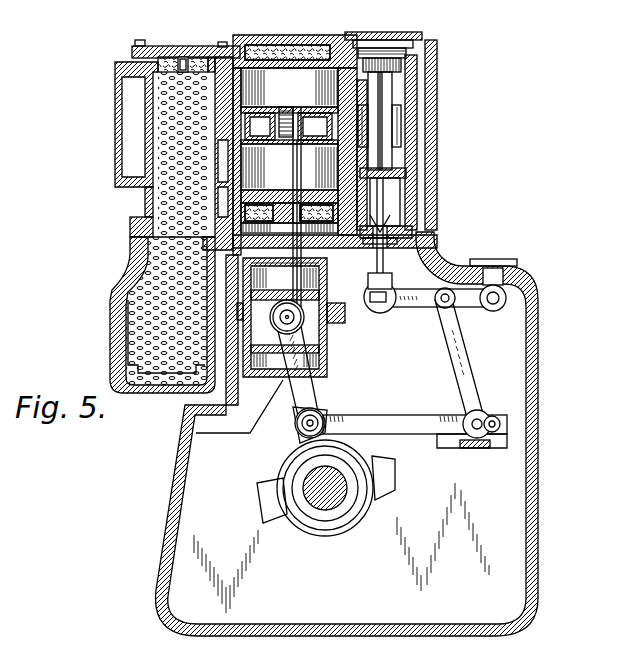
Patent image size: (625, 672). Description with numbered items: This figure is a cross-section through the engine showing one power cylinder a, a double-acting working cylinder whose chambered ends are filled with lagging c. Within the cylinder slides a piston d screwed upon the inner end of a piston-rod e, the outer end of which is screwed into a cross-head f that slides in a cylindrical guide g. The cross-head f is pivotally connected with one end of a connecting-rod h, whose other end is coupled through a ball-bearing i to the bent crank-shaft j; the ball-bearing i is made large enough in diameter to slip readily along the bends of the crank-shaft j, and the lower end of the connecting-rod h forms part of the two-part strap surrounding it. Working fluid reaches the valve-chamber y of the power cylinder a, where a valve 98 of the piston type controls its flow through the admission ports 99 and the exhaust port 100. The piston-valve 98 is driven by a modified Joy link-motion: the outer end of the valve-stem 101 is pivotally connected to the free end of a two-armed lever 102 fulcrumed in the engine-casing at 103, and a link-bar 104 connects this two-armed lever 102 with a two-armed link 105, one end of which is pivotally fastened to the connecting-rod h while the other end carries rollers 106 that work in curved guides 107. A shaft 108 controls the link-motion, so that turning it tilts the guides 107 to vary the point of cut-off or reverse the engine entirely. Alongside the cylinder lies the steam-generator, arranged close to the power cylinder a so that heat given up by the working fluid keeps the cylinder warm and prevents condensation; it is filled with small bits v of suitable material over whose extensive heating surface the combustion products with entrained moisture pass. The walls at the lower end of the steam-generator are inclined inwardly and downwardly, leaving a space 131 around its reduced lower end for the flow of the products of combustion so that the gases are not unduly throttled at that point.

The power cylinder a is at (289, 87).
The lagging c is at (327, 37).
The piston d is at (298, 108).
The piston-rod e is at (287, 165).
The cross-head f is at (328, 337).
The cylindrical guide g is at (328, 362).
The connecting-rod h is at (292, 413).
The ball-bearing i is at (305, 527).
The crank-shaft j is at (330, 500).
The small bits of material v is at (150, 290).
The valve-chamber y is at (393, 205).
The piston-valve 98 is at (377, 95).
The admission port 99 is at (362, 37).
The exhaust port 100 is at (395, 123).
The valve-stem 101 is at (378, 260).
The two-armed lever 102 is at (383, 308).
The fulcrum 103 is at (500, 298).
The link-bar 104 is at (462, 345).
The two-armed link 105 is at (415, 417).
The rollers 106 is at (502, 420).
The curved guides 107 is at (495, 412).
The shaft 108 is at (488, 443).
The space 131 is at (122, 355).